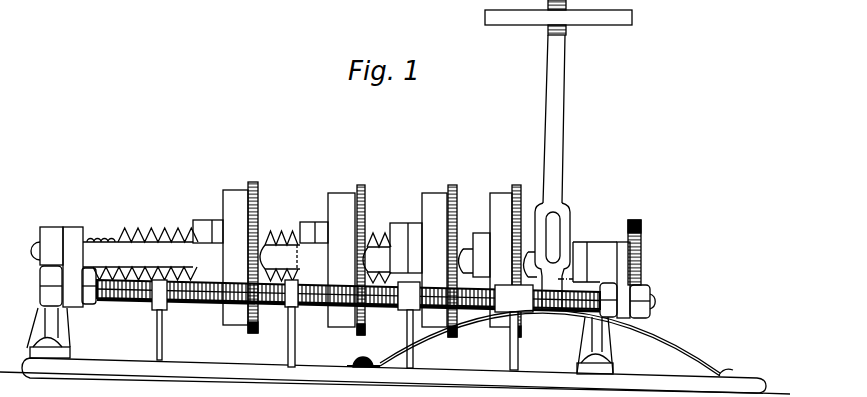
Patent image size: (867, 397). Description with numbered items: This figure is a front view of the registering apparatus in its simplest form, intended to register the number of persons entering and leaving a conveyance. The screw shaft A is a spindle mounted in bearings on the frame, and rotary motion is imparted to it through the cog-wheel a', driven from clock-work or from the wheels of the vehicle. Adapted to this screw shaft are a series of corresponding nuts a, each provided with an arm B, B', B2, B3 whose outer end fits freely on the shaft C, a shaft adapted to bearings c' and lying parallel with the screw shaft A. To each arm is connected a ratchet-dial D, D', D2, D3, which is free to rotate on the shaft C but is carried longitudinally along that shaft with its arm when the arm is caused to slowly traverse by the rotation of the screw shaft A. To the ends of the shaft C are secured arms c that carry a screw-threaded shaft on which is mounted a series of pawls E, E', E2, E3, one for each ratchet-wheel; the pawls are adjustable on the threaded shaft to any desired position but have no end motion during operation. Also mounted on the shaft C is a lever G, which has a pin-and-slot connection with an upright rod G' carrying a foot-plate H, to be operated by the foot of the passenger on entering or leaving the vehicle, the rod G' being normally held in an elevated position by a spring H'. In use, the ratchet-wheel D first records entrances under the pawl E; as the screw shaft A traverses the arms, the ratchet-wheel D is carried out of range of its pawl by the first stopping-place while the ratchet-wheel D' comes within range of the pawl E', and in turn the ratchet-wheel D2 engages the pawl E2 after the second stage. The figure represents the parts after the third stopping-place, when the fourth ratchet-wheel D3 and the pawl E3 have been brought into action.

The screw shaft A is at (242, 249).
The nut a is at (260, 224).
The cog-wheel a' is at (643, 252).
The arm B is at (227, 257).
The arm B' is at (333, 260).
The arm B2 is at (418, 260).
The arm B3 is at (492, 260).
The shaft C is at (284, 258).
The arm c is at (346, 272).
The bearing c' is at (51, 246).
The ratchet-dial D is at (259, 254).
The ratchet-dial D' is at (369, 255).
The ratchet-dial D2 is at (462, 256).
The ratchet-dial D3 is at (526, 256).
The pawl E is at (153, 320).
The pawl E' is at (282, 323).
The pawl E2 is at (400, 325).
The pawl E3 is at (515, 327).
The lever G is at (552, 256).
The upright rod G' is at (559, 119).
The foot-plate H is at (558, 17).
The spring H' is at (540, 343).